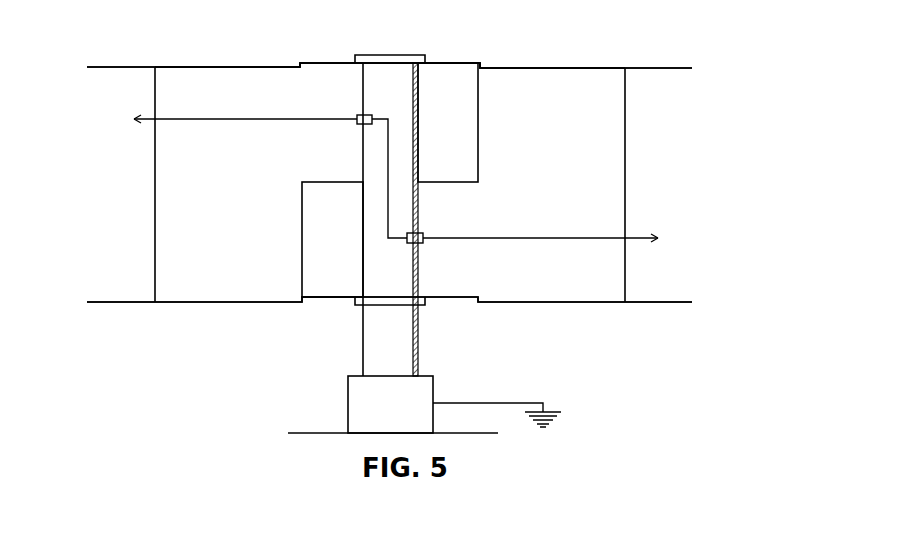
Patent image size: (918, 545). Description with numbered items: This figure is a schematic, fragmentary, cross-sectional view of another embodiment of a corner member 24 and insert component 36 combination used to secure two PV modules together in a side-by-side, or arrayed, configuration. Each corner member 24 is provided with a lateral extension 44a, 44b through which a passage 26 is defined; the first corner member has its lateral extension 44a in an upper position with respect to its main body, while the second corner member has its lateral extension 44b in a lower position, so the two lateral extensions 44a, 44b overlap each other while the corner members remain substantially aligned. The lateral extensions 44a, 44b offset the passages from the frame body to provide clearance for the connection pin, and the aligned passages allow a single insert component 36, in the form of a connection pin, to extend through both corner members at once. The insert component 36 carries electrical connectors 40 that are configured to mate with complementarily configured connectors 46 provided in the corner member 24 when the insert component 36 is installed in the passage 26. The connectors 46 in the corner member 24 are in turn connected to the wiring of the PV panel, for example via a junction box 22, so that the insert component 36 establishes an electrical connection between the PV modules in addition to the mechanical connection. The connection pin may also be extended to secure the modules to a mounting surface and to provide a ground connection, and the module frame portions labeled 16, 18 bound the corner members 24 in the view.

The channel wall 16 is at (112, 66).
The channel wall 18 is at (697, 63).
The junction box 22 is at (397, 178).
The corner member 24 is at (241, 58).
The passage 26 is at (418, 159).
The insert component 36 is at (375, 262).
The electrical connector 40 is at (372, 114).
The lateral extension 44a is at (478, 128).
The lateral extension 44b is at (302, 226).
The electrical connector 46 is at (357, 123).